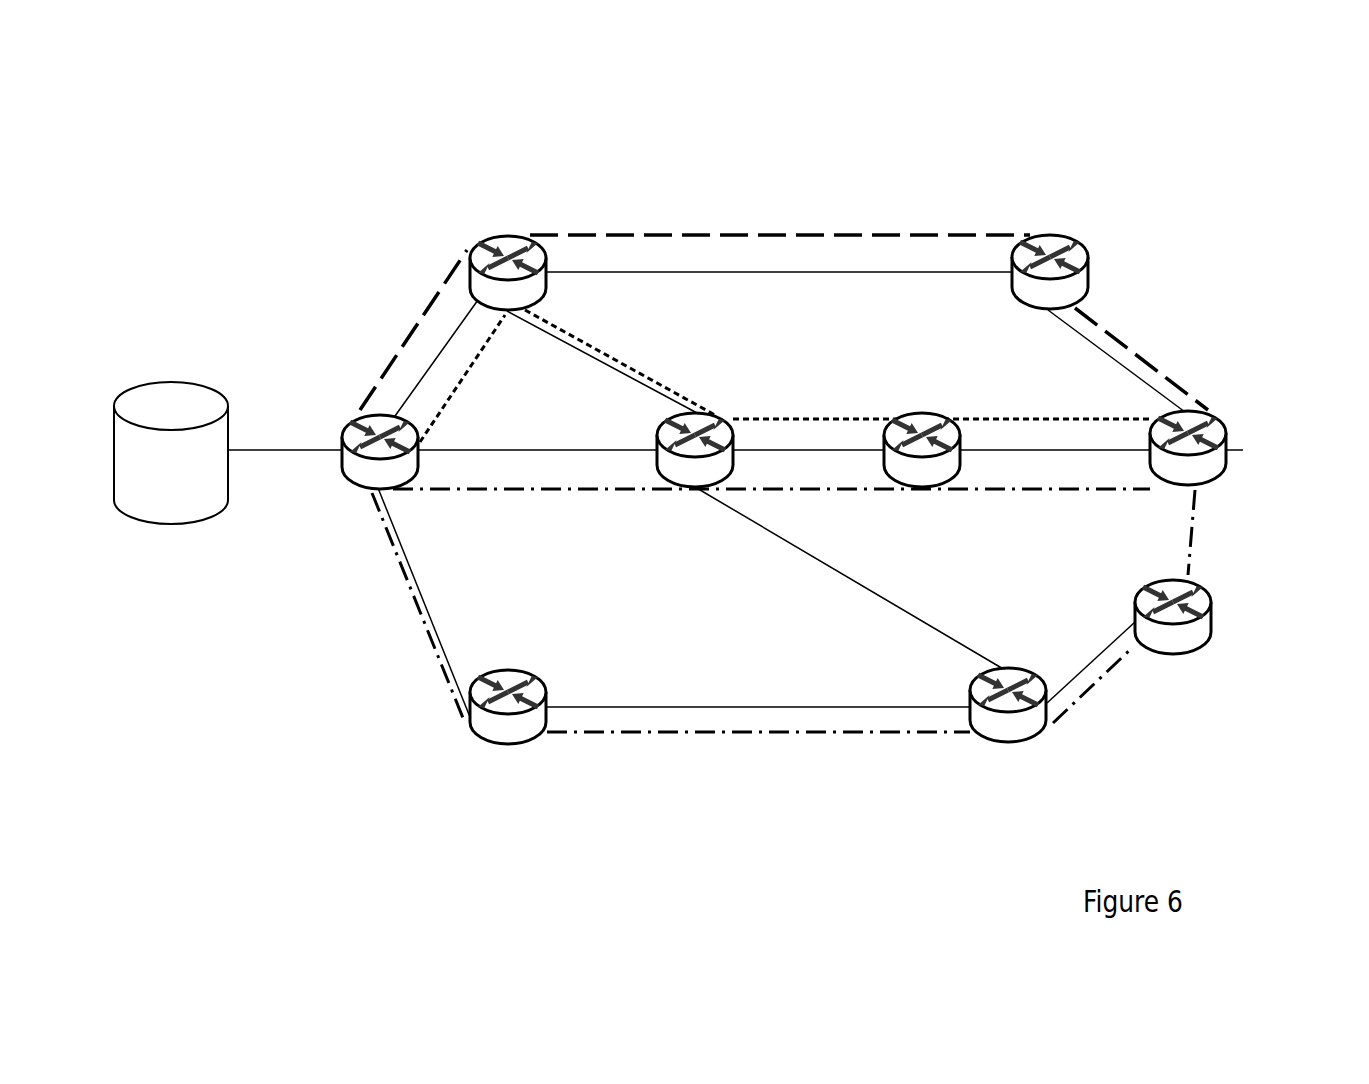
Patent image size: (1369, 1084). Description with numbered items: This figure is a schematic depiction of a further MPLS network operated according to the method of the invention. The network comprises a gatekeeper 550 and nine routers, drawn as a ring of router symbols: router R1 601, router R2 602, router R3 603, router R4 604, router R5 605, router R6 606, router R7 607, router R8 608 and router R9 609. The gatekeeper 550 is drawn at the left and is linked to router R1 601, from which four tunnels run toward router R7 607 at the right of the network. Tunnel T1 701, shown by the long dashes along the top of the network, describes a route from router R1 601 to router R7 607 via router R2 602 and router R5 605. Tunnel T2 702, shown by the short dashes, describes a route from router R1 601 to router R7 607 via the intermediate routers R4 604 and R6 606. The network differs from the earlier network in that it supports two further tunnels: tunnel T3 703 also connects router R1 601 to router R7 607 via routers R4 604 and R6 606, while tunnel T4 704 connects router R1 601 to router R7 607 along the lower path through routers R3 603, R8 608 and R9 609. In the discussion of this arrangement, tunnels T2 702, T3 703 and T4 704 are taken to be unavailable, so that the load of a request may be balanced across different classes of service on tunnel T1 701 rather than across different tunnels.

The gatekeeper 550 is at (170, 381).
The router R1 601 is at (350, 422).
The router R2 602 is at (508, 233).
The router R3 603 is at (508, 745).
The router R4 604 is at (718, 414).
The router R5 605 is at (1050, 233).
The router R6 606 is at (920, 410).
The router R7 607 is at (1228, 450).
The router R8 608 is at (1003, 745).
The router R9 609 is at (1175, 658).
The tunnel T1 701 is at (690, 232).
The tunnel T2 702 is at (812, 418).
The tunnel T3 703 is at (488, 490).
The tunnel T4 704 is at (656, 734).